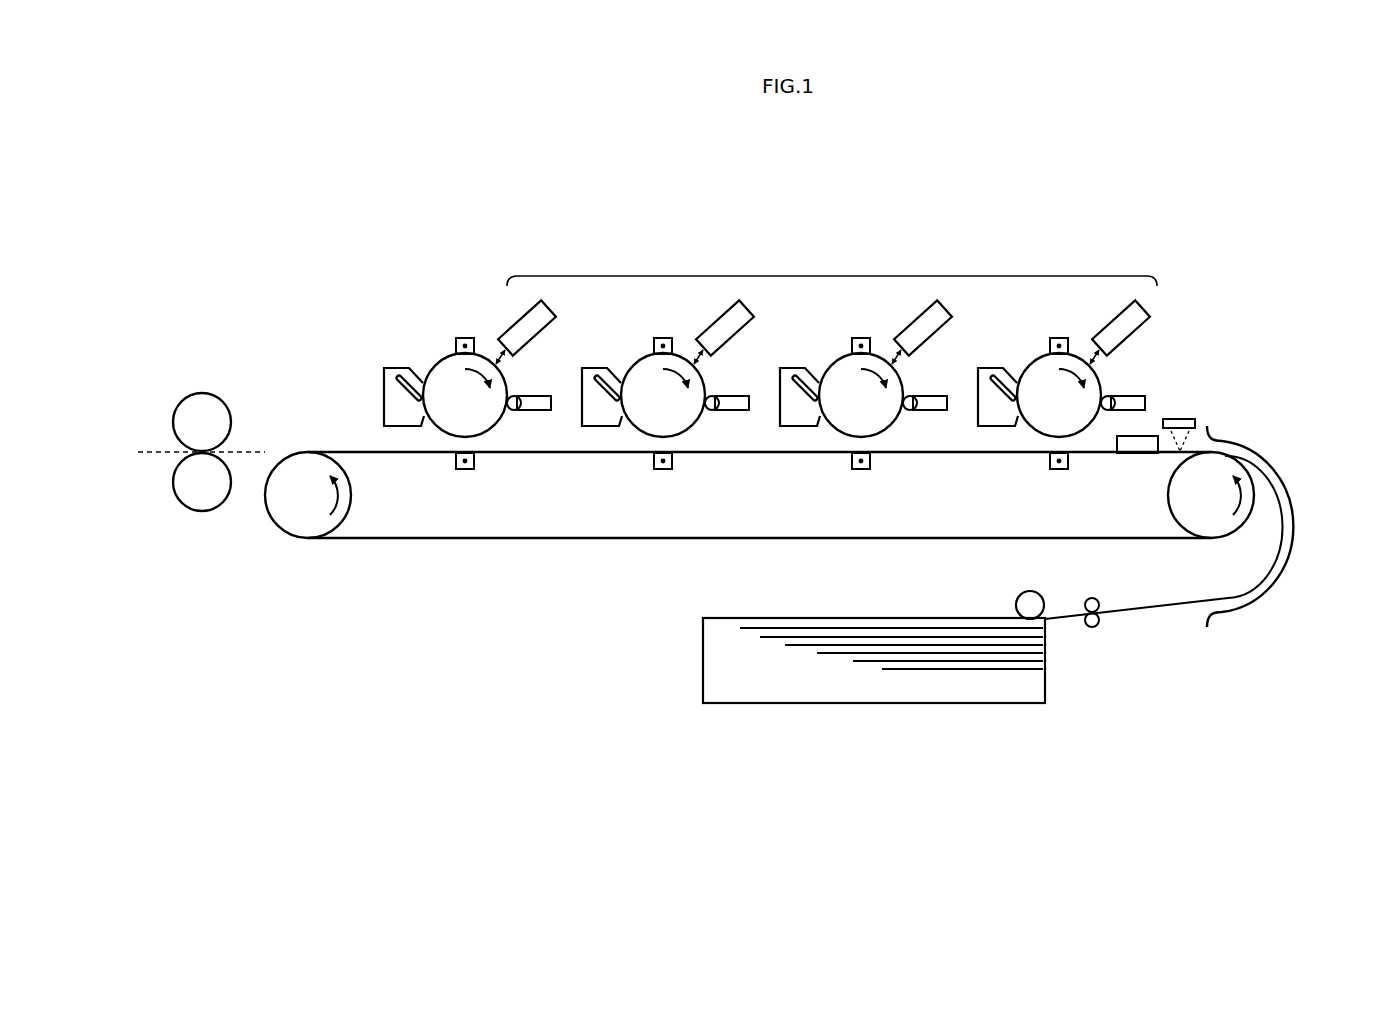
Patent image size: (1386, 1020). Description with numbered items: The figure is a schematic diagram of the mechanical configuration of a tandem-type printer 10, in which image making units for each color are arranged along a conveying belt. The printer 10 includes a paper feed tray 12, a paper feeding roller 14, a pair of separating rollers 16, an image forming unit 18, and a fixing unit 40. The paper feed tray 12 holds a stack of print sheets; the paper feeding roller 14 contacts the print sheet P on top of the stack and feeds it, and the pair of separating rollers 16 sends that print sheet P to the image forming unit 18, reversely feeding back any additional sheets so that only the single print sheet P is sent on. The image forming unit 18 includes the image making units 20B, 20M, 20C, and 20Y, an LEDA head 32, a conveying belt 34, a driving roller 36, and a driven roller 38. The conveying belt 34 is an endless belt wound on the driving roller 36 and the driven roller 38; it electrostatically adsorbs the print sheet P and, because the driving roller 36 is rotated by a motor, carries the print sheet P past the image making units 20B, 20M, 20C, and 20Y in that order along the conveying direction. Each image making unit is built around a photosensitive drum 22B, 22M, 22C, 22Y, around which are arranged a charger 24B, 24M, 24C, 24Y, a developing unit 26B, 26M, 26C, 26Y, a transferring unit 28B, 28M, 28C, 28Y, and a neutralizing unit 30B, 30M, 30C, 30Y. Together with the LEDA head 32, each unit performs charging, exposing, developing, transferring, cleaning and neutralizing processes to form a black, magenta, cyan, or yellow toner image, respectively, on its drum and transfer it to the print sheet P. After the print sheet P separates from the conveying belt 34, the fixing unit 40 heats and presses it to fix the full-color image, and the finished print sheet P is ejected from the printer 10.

The printer 10 is at (1197, 227).
The paper feed tray 12 is at (1046, 682).
The paper feeding roller 14 is at (1025, 591).
The pair of separating rollers 16 is at (1102, 598).
The image forming unit 18 is at (1309, 285).
The image making unit 20Y is at (557, 333).
The image making unit 20C is at (755, 333).
The image making unit 20M is at (953, 333).
The image making unit 20B is at (1151, 333).
The photosensitive drum 22Y is at (499, 423).
The photosensitive drum 22C is at (697, 423).
The photosensitive drum 22M is at (895, 423).
The photosensitive drum 22B is at (1088, 426).
The charger 24Y is at (465, 338).
The charger 24C is at (663, 338).
The charger 24M is at (861, 338).
The charger 24B is at (1059, 338).
The developing unit 26Y is at (534, 395).
The developing unit 26C is at (732, 395).
The developing unit 26M is at (930, 395).
The developing unit 26B is at (1128, 395).
The transferring unit 28Y is at (465, 470).
The transferring unit 28C is at (663, 470).
The transferring unit 28M is at (861, 470).
The transferring unit 28B is at (1059, 470).
The neutralizing unit 30Y is at (384, 397).
The neutralizing unit 30C is at (601, 427).
The neutralizing unit 30M is at (799, 427).
The neutralizing unit 30B is at (997, 427).
The LEDA head 32 is at (833, 276).
The conveying belt 34 is at (568, 540).
The driving roller 36 is at (1168, 501).
The driven roller 38 is at (352, 490).
The fixing unit 40 is at (210, 386).
The print sheet P is at (848, 618).